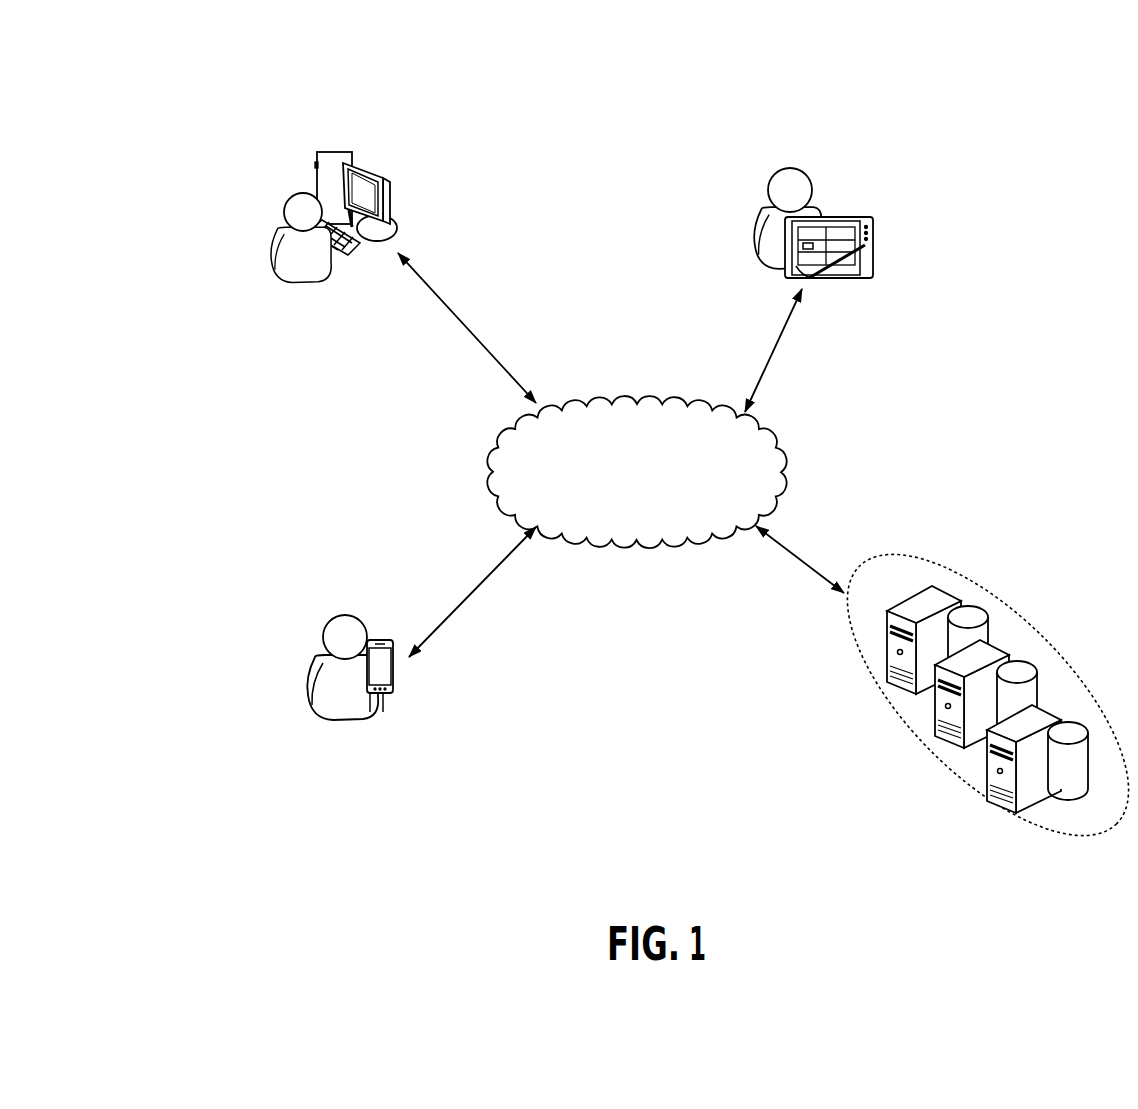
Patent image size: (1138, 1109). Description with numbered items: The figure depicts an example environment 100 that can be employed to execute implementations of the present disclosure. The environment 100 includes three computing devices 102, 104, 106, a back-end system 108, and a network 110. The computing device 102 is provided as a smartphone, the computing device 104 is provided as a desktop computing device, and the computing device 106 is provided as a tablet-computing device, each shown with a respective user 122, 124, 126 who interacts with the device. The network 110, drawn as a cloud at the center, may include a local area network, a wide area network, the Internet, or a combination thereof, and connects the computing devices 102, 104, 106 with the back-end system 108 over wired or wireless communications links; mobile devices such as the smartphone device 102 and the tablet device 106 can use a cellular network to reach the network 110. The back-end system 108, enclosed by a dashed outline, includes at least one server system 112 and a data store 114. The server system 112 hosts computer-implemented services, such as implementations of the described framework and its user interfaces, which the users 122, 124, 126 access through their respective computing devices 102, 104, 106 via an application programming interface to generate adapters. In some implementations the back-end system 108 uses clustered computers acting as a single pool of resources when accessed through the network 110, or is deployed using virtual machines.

The example environment 100 is at (222, 98).
The computing device 102 is at (394, 680).
The computing device 104 is at (394, 198).
The computing device 106 is at (850, 216).
The back-end system 108 is at (970, 693).
The network 110 is at (626, 540).
The server system 112 is at (913, 593).
The data store 114 is at (966, 600).
The user 122 is at (310, 667).
The user 124 is at (298, 193).
The user 126 is at (758, 218).